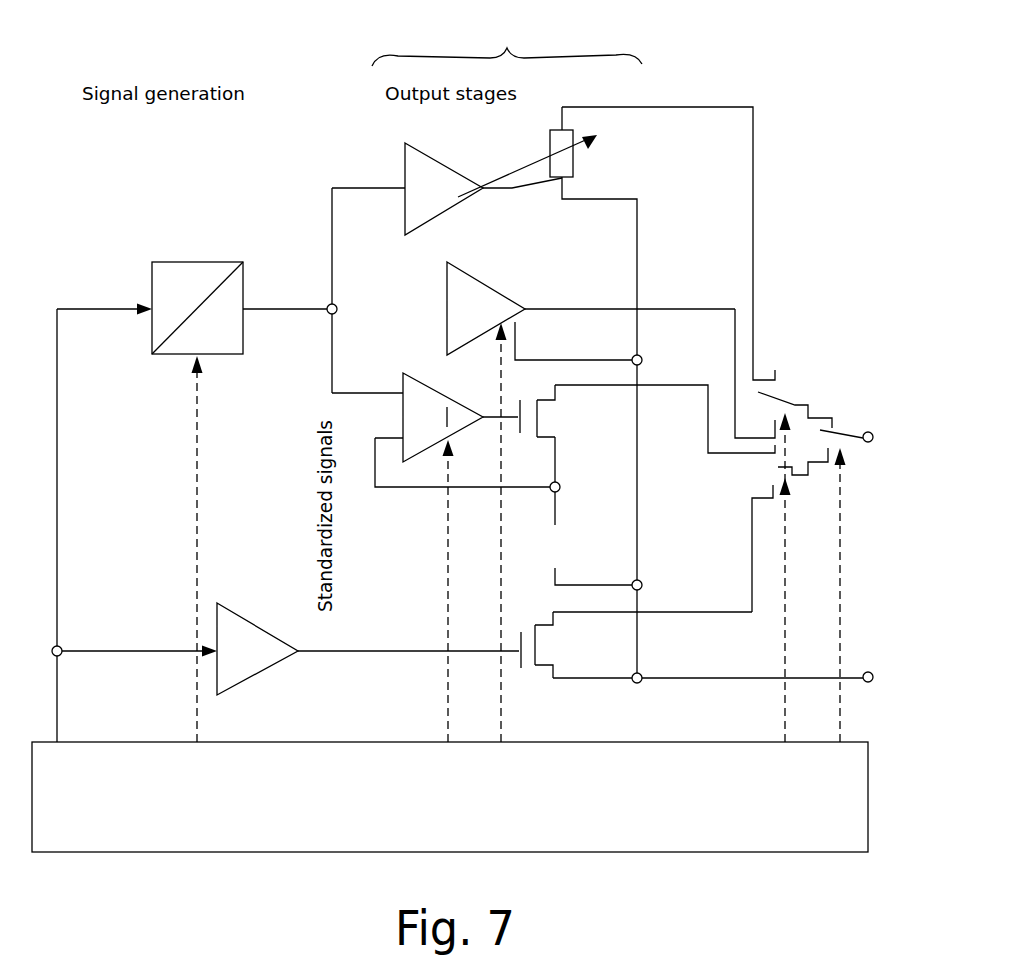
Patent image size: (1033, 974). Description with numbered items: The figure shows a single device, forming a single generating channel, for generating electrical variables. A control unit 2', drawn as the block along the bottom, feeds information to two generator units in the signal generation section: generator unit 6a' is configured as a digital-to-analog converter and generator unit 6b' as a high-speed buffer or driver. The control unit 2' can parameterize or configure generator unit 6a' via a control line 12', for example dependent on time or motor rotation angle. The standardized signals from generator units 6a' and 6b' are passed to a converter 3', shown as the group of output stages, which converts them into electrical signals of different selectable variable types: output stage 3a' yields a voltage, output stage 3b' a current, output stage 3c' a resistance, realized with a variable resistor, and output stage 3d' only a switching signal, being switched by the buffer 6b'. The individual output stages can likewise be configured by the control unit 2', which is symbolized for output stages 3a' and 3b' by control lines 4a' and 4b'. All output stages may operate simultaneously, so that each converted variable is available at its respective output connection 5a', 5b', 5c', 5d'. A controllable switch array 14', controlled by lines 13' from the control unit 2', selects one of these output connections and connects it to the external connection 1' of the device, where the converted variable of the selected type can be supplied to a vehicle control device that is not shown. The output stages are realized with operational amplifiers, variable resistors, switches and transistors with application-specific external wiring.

The external connection 1' is at (846, 401).
The control unit 2' is at (450, 797).
The converter 3' is at (507, 44).
The output stage 3a' is at (522, 306).
The output stage 3b' is at (459, 392).
The output stage 3c' is at (501, 180).
The output stage 3d' is at (563, 645).
The control line 4a' is at (412, 591).
The control line 4b' is at (525, 532).
The output connection 5a' is at (730, 373).
The output connection 5b' is at (665, 447).
The output connection 5c' is at (684, 243).
The output connection 5d' is at (724, 548).
The generator unit 6a' is at (197, 267).
The generator unit 6b' is at (257, 616).
The control line 12' is at (230, 549).
The lines 13' is at (813, 577).
The controllable switch array 14' is at (798, 399).